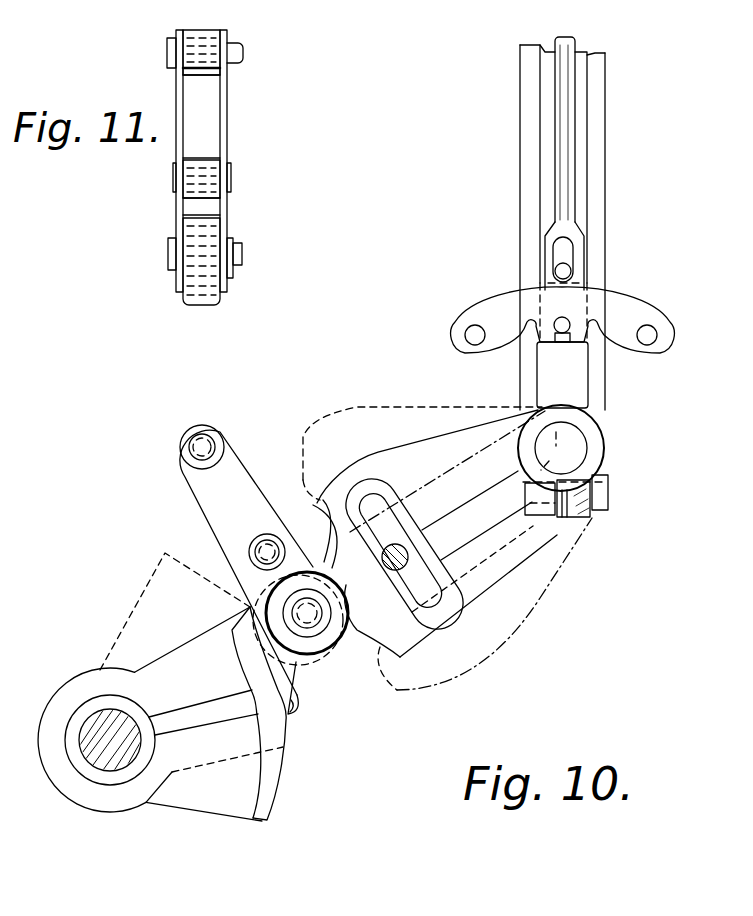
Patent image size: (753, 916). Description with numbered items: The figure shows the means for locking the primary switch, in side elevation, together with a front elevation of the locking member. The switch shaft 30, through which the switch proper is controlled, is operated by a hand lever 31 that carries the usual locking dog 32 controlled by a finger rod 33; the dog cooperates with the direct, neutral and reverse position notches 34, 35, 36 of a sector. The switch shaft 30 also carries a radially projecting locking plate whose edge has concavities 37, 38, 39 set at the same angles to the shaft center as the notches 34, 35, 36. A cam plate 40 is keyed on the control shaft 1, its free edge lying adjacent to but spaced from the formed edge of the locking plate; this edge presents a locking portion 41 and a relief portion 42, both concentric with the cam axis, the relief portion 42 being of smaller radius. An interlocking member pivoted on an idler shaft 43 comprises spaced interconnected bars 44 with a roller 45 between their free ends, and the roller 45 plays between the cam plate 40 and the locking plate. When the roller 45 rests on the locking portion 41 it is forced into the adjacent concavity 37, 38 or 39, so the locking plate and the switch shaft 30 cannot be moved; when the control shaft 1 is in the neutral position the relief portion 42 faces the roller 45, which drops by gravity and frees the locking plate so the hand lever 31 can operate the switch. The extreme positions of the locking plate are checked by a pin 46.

In FIG. 10, the control shaft 1 is at (87, 762).
In FIG. 10, the switch shaft 30 is at (573, 441).
In FIG. 10, the hand lever 31 is at (606, 199).
In FIG. 10, the locking dog 32 is at (566, 342).
In FIG. 10, the finger rod 33 is at (576, 140).
In FIG. 10, the direct position notch 34 is at (530, 323).
In FIG. 10, the neutral position notch 35 is at (567, 320).
In FIG. 10, the reverse position notch 36 is at (595, 328).
In FIG. 10, the edge concavity 37 is at (400, 665).
In FIG. 10, the edge concavity 38 is at (393, 546).
In FIG. 10, the edge concavity 39 is at (304, 514).
In FIG. 10, the cam plate 40 is at (171, 655).
In FIG. 10, the locking portion 41 is at (296, 690).
In FIG. 10, the relief portion 42 is at (287, 764).
In FIG. 10, the idler shaft 43 is at (208, 438).
In FIG. 11, the idler shaft 43 is at (242, 56).
In FIG. 10, the spaced interconnected bars 44 is at (233, 455).
In FIG. 11, the spaced interconnected bars 44 is at (229, 127).
In FIG. 10, the roller 45 is at (323, 650).
In FIG. 11, the roller 45 is at (183, 297).
In FIG. 10, the pin 46 is at (477, 515).